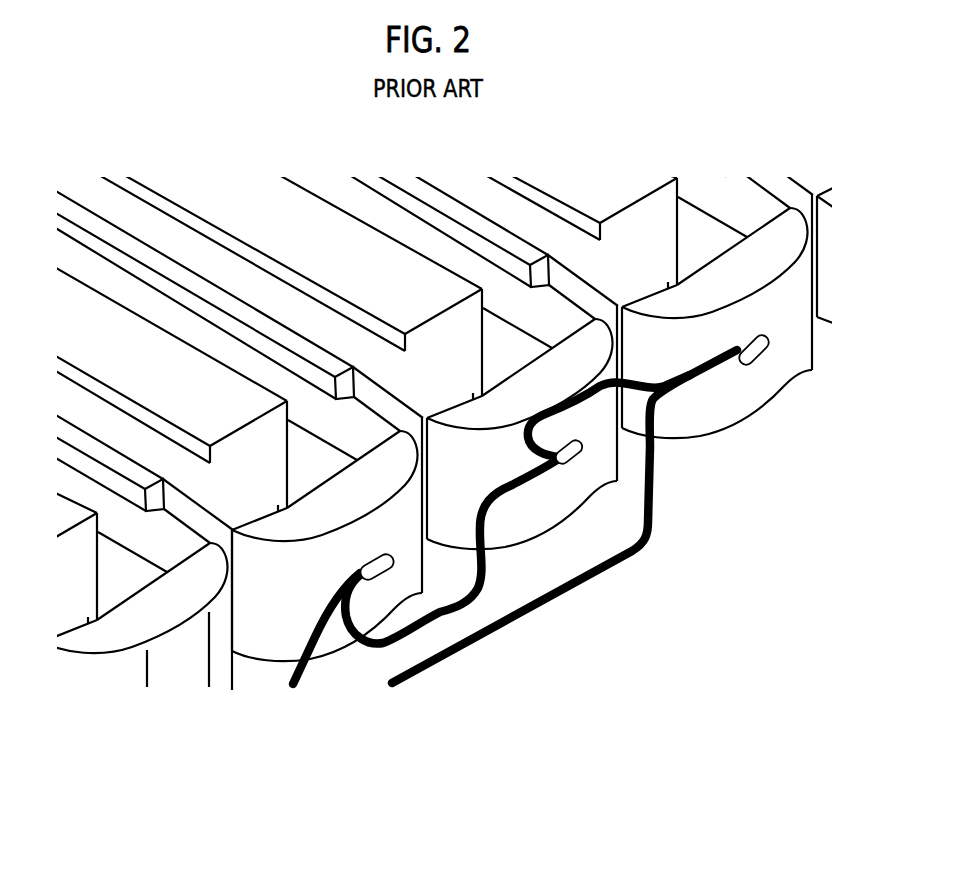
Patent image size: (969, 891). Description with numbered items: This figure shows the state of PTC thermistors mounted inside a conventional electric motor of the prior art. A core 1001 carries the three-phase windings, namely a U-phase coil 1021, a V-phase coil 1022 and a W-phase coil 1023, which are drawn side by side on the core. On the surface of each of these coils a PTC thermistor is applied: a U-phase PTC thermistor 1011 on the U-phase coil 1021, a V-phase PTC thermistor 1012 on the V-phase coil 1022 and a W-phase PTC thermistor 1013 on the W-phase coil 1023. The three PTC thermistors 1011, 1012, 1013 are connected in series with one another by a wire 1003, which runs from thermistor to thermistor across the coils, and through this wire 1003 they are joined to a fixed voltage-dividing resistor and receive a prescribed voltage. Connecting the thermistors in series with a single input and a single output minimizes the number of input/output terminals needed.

The core 1001 is at (612, 187).
The wire 1003 is at (563, 592).
The U-phase PTC thermistor 1011 is at (440, 602).
The V-phase PTC thermistor 1012 is at (583, 460).
The W-phase PTC thermistor 1013 is at (757, 351).
The U-phase coil 1021 is at (275, 652).
The V-phase coil 1022 is at (540, 500).
The W-phase coil 1023 is at (705, 417).